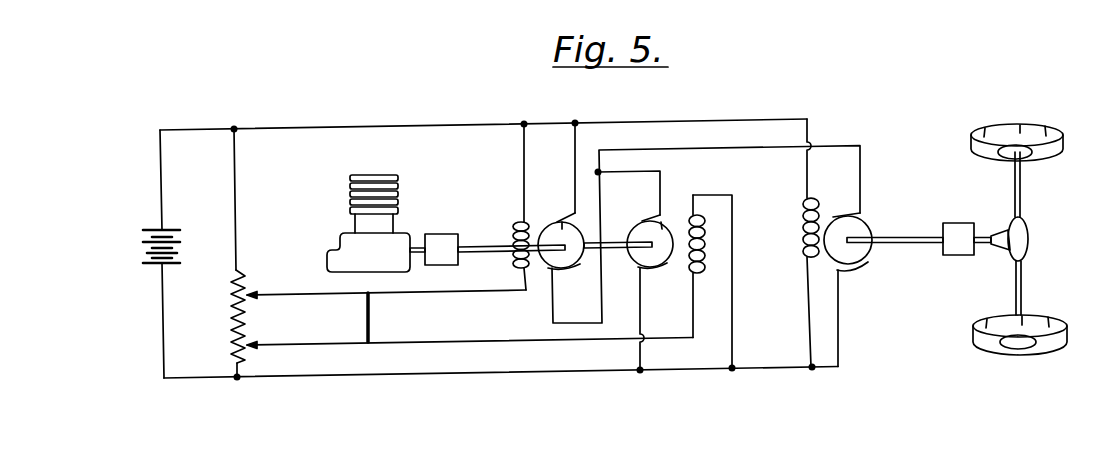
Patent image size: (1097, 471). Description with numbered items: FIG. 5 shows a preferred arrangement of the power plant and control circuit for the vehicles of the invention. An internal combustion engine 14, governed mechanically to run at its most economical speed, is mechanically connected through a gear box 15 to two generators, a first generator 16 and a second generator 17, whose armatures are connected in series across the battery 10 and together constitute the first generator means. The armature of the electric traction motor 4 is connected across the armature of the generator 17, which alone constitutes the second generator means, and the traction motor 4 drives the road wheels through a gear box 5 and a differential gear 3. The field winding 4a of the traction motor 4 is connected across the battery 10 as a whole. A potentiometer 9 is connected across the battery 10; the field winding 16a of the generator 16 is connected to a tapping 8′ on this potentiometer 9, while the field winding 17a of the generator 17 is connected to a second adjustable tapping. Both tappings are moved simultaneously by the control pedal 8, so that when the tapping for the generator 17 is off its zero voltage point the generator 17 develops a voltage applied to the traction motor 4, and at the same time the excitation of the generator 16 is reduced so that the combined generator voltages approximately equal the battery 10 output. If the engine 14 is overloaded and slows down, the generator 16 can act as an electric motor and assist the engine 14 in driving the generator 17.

The differential gear 3 is at (1030, 240).
The electric traction motor 4 is at (866, 228).
The field winding of motor 4a is at (801, 228).
The gear box 5 is at (953, 223).
The control pedal 8 is at (370, 326).
The tapping 8′ is at (297, 297).
The potentiometer 9 is at (245, 290).
The battery 10 is at (143, 256).
The internal combustion engine 14 is at (397, 200).
The gear box 15 is at (441, 234).
The first generator 16 is at (568, 222).
The field winding of generator 16 16a is at (520, 233).
The second generator 17 is at (660, 230).
The field winding of generator 17 17a is at (688, 274).